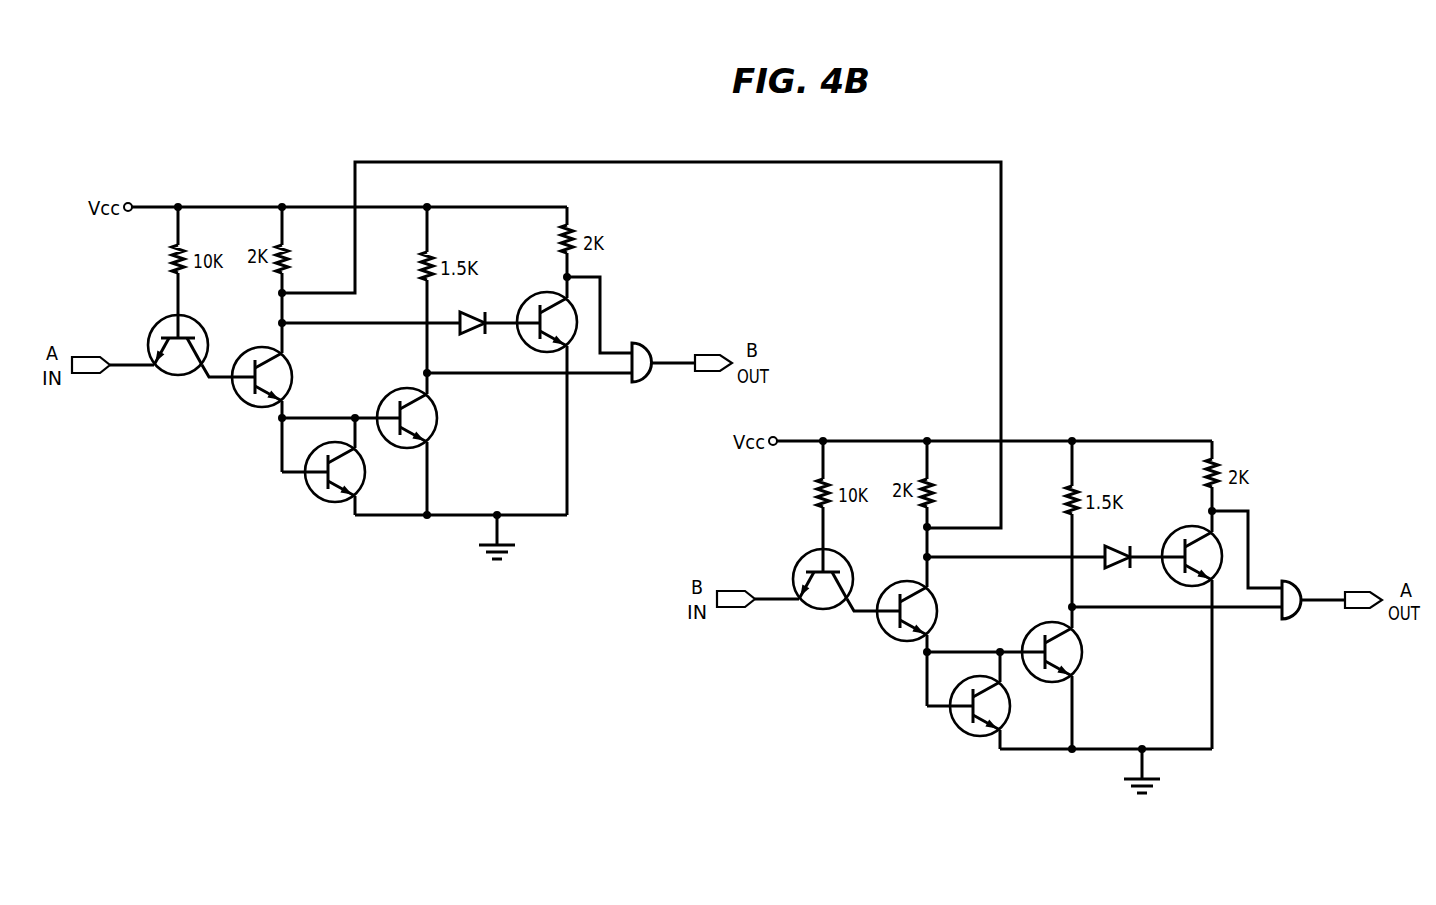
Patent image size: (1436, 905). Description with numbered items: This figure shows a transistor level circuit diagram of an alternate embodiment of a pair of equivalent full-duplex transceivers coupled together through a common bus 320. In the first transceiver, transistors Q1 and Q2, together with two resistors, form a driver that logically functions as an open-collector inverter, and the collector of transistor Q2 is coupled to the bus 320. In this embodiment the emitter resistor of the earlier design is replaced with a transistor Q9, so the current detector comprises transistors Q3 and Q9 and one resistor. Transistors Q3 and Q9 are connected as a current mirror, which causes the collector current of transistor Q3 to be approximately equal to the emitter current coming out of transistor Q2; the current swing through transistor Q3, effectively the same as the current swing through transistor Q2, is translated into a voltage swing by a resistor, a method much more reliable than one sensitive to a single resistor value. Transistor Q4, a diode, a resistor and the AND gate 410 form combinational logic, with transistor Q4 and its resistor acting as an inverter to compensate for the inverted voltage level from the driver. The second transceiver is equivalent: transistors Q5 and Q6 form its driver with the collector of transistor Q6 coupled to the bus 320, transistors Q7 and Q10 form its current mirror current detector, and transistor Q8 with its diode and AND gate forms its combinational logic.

The bus 320 is at (598, 162).
The AND gate 410 is at (638, 345).
The transistor Q1 is at (178, 360).
The transistor Q2 is at (277, 377).
The transistor Q3 is at (422, 418).
The transistor Q4 is at (536, 328).
The transistor Q5 is at (823, 594).
The transistor Q6 is at (922, 611).
The transistor Q7 is at (1067, 652).
The transistor Q8 is at (1181, 563).
The transistor Q9 is at (328, 484).
The transistor Q10 is at (970, 717).